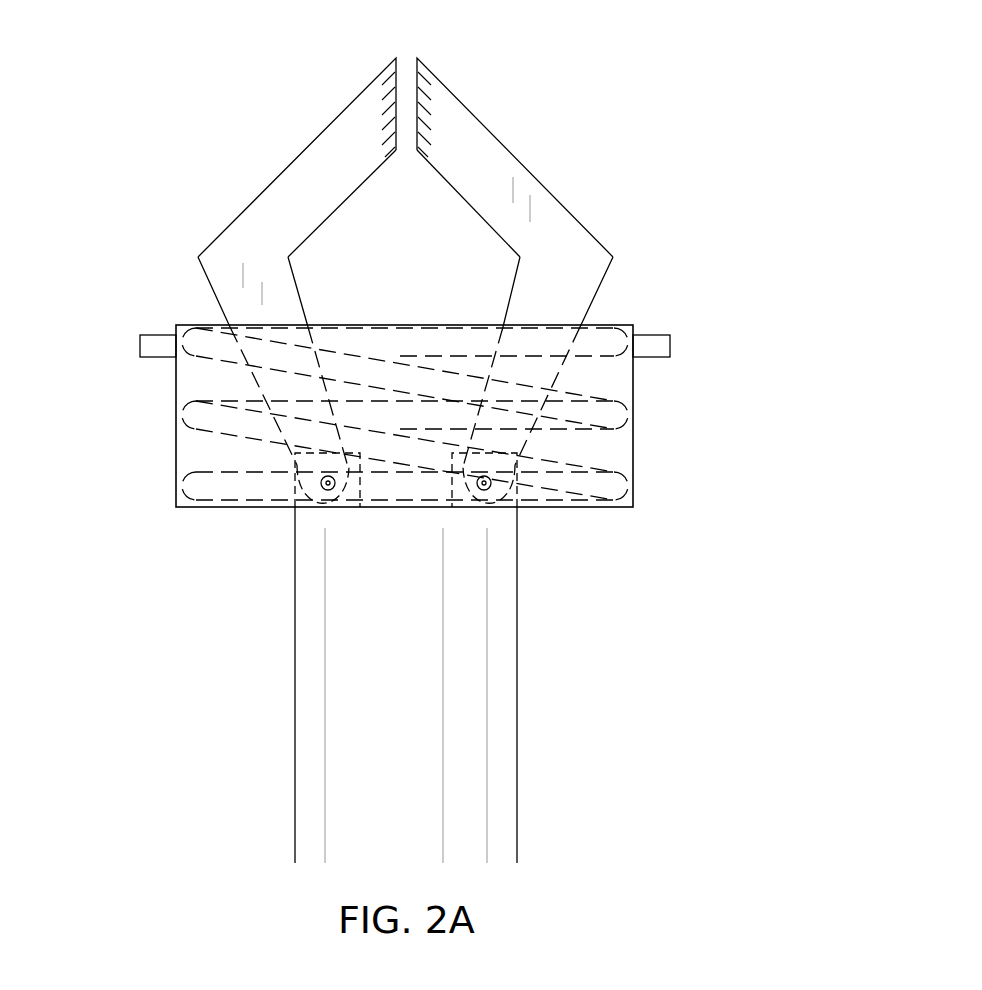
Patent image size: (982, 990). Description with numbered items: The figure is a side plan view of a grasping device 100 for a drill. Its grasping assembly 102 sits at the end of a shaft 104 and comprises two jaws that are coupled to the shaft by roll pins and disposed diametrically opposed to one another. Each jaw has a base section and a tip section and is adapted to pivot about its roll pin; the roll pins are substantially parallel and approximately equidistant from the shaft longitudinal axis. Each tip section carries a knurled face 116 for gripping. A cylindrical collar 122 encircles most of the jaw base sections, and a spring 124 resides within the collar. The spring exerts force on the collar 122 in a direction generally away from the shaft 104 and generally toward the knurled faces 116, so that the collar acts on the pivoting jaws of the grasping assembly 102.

The grasping device 100 is at (170, 690).
The grasping assembly 102 is at (790, 29).
The shaft 104 is at (515, 737).
The knurled face 116 is at (412, 88).
The cylindrical collar 122 is at (177, 410).
The spring 124 is at (582, 428).